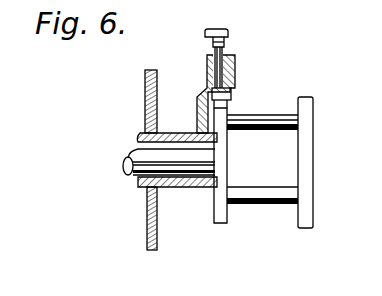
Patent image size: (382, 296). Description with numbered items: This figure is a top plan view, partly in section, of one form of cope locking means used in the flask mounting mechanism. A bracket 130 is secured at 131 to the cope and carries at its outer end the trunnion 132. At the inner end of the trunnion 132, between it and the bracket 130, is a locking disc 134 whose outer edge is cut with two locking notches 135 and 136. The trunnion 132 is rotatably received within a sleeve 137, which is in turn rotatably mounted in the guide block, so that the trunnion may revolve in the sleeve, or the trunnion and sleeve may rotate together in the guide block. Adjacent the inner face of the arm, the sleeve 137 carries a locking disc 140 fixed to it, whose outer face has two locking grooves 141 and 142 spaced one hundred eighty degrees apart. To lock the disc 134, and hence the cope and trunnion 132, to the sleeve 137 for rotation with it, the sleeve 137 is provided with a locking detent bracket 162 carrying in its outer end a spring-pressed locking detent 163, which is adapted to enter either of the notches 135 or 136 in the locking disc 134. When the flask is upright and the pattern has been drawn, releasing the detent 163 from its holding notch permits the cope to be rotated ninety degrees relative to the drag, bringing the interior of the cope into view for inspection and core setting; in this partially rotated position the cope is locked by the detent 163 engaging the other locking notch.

The bracket 130 is at (247, 143).
The securing point 131 is at (313, 153).
The trunnion 132 is at (129, 156).
The locking disc 134 is at (227, 218).
The locking notch 135 is at (235, 106).
The locking notch 136 is at (205, 164).
The sleeve 137 is at (138, 135).
The locking disc 140 is at (145, 110).
The locking groove 141 is at (145, 87).
The locking groove 142 is at (148, 225).
The locking detent bracket 162 is at (163, 128).
The spring-pressed locking detent 163 is at (224, 44).